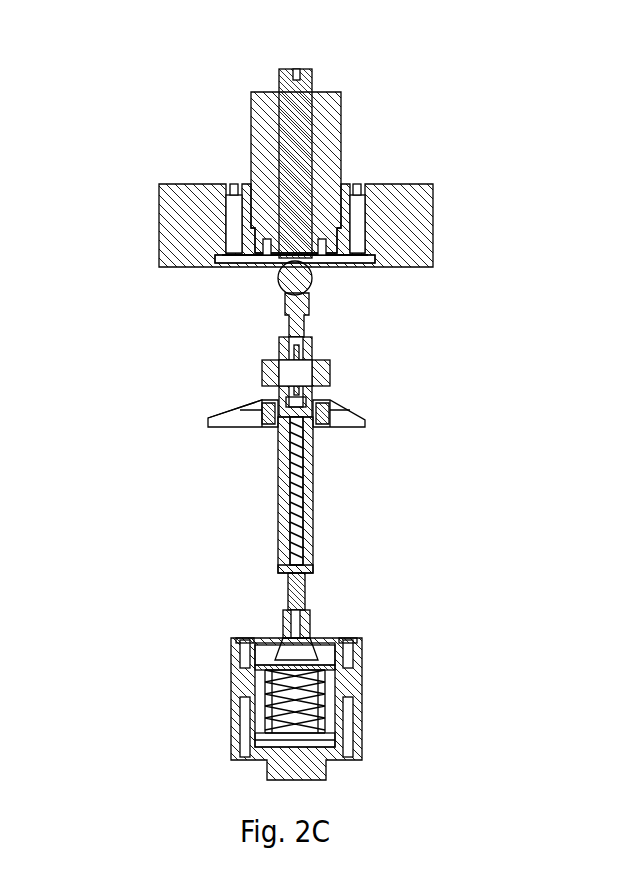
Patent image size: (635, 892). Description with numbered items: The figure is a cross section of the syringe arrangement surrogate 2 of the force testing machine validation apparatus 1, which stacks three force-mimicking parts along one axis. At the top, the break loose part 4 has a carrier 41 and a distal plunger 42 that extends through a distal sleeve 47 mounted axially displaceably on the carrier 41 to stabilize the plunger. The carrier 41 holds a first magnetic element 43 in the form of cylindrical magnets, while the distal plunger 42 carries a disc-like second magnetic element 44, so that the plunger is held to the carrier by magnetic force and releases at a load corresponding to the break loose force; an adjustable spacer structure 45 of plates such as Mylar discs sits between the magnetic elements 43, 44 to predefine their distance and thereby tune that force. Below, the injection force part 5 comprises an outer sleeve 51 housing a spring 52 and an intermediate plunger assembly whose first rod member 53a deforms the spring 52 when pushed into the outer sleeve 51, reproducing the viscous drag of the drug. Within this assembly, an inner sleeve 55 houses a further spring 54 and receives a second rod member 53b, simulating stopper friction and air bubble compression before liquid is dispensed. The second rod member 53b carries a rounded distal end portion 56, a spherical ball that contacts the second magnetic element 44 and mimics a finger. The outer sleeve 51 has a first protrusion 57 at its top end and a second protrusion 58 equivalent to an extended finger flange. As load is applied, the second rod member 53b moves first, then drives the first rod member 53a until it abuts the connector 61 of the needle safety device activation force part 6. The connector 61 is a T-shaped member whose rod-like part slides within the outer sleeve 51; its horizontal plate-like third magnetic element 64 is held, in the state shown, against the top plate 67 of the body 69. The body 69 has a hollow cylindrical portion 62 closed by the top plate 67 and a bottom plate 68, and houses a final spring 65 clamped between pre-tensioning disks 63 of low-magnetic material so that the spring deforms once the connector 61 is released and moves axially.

The force testing machine validation apparatus 1 is at (110, 112).
The syringe arrangement surrogate 2 is at (125, 200).
The break loose part 4 is at (523, 58).
The injection force part 5 is at (523, 278).
The needle safety device activation force part 6 is at (523, 625).
The carrier 41 is at (413, 205).
The distal plunger 42 is at (303, 97).
The first magnetic element 43 is at (353, 222).
The second magnetic element 44 is at (362, 263).
The adjustable spacer structure 45 is at (222, 257).
The distal sleeve 47 is at (258, 148).
The outer sleeve 51 is at (278, 523).
The spring 52 is at (305, 511).
The first rod member 53a is at (312, 468).
The second rod member 53b is at (305, 335).
The further spring 54 is at (310, 397).
The inner sleeve 55 is at (285, 352).
The rounded distal end portion 56 is at (293, 280).
The first protrusion 57 is at (262, 375).
The second protrusion 58 is at (228, 420).
The connector 61 is at (305, 600).
The cylindrical portion 62 is at (235, 706).
The pre-tensioning disks 63 is at (255, 737).
The third magnetic element 64 is at (317, 650).
The final spring 65 is at (265, 693).
The top plate 67 is at (240, 641).
The bottom plate 68 is at (345, 747).
The body 69 is at (367, 667).